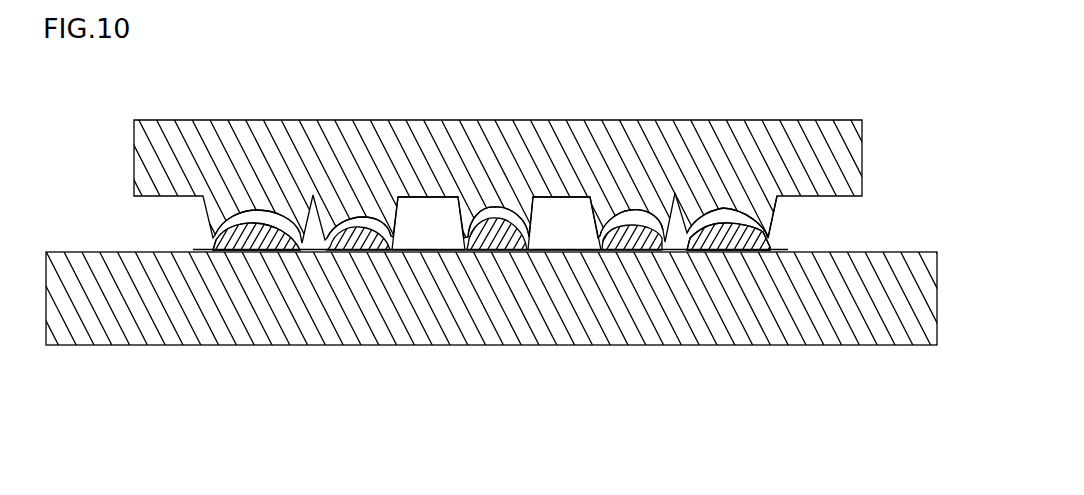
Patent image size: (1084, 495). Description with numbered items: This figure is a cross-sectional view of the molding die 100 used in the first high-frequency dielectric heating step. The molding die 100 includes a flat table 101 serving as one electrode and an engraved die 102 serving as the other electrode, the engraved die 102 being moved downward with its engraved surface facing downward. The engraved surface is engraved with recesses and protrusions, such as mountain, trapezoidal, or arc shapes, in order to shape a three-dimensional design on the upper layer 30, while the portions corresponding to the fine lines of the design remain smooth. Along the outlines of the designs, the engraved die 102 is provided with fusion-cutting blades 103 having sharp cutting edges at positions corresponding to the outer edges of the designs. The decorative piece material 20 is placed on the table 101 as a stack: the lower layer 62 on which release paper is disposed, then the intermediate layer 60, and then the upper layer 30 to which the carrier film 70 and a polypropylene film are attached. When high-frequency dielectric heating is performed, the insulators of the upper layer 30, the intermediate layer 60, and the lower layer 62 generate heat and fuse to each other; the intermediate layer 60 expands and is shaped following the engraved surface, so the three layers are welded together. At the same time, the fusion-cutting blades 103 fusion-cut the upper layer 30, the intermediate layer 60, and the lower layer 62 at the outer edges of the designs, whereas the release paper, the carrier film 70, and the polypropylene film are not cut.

The molding die 100 is at (895, 124).
The table 101 is at (893, 327).
The engraved die 102 is at (700, 126).
The fusion-cutting blades 103 is at (769, 236).
The decorative piece material 20 is at (212, 238).
The upper layer 30 is at (745, 221).
The intermediate layer 60 is at (260, 230).
The lower layer 62 is at (707, 253).
The carrier film 70 is at (772, 250).